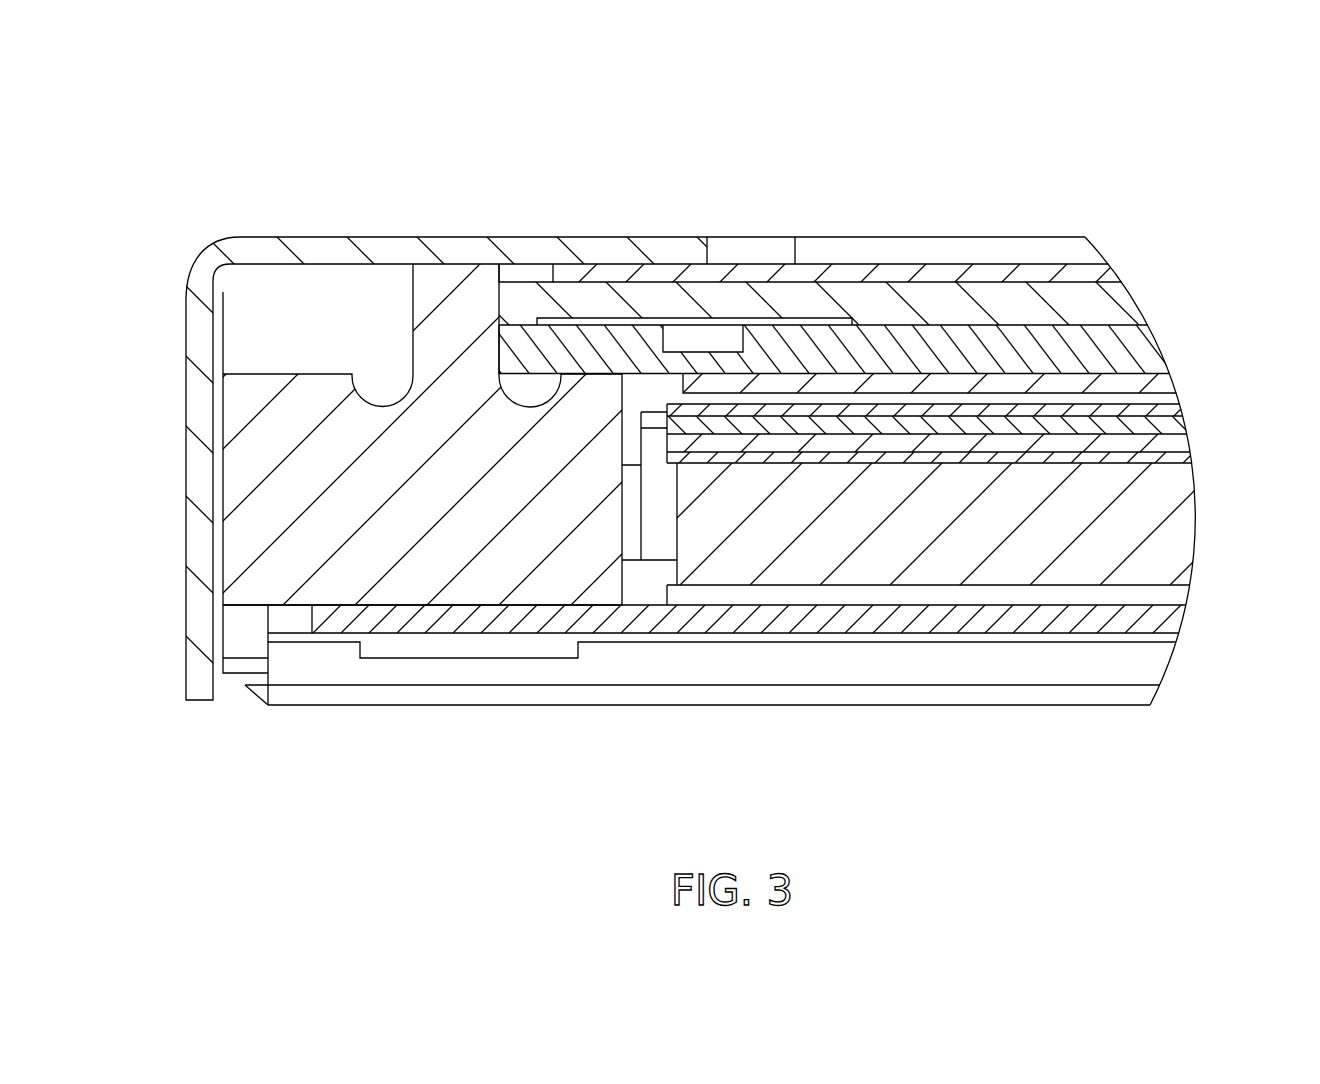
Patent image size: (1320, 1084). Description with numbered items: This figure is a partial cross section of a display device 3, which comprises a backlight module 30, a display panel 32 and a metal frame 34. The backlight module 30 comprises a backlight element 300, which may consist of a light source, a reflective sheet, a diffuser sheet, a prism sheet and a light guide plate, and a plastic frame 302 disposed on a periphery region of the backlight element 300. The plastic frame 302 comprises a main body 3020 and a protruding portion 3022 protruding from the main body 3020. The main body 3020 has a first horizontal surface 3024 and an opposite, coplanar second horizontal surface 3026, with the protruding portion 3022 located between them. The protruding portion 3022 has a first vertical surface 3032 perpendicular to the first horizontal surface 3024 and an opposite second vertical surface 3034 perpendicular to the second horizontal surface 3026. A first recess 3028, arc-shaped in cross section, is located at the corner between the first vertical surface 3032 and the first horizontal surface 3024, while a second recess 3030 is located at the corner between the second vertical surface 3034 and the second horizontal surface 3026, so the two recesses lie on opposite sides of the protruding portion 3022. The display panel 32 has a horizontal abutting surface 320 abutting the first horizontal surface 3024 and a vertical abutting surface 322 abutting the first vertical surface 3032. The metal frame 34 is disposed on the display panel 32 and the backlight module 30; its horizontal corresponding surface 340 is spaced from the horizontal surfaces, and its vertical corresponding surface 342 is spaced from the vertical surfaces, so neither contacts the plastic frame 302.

The display device 3 is at (686, 467).
The backlight module 30 is at (686, 470).
The backlight element 300 is at (1198, 403).
The plastic frame 302 is at (637, 470).
The main body 3020 is at (323, 540).
The protruding portion 3022 is at (450, 335).
The first horizontal surface 3024 is at (605, 377).
The second horizontal surface 3026 is at (452, 264).
The first recess 3028 is at (532, 408).
The second recess 3030 is at (382, 406).
The first vertical surface 3032 is at (499, 317).
The second vertical surface 3034 is at (410, 320).
The display panel 32 is at (882, 277).
The horizontal abutting surface 320 is at (605, 377).
The vertical abutting surface 322 is at (500, 350).
The metal frame 34 is at (647, 415).
The horizontal corresponding surface 340 is at (317, 250).
The vertical corresponding surface 342 is at (223, 320).